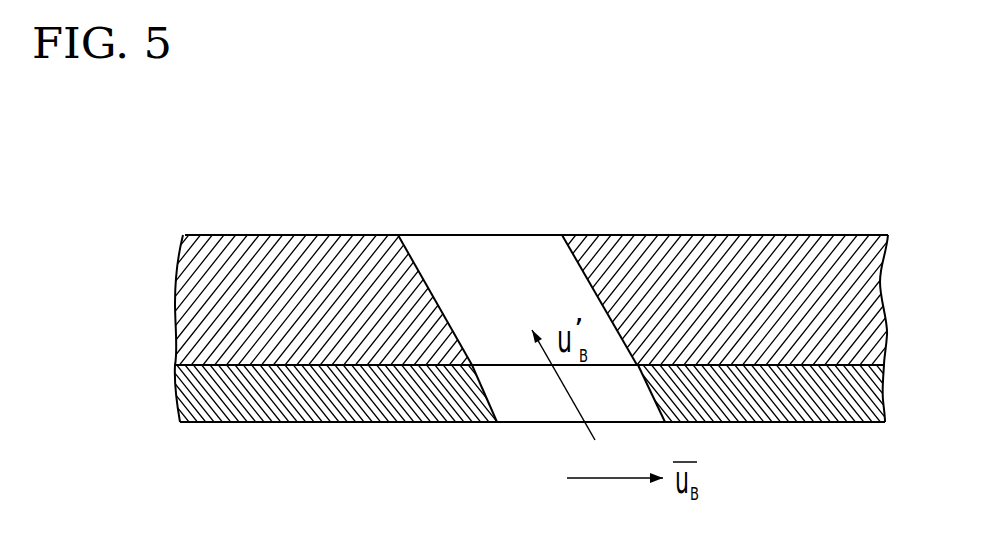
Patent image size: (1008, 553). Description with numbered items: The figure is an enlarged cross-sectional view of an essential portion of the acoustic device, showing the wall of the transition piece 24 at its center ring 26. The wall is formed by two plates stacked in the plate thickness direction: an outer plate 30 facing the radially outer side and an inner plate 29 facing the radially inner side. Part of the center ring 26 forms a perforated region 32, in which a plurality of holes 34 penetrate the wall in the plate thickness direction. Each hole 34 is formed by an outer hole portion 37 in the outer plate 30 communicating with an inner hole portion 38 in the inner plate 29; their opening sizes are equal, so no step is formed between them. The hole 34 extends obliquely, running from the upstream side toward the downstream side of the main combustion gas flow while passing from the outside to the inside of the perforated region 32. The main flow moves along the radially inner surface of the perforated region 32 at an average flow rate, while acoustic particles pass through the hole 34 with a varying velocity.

The transition piece 24 is at (322, 190).
The center ring 26 is at (531, 328).
The inner plate 29 is at (192, 395).
The outer plate 30 is at (192, 303).
The perforated region 32 is at (425, 438).
The hole 34 is at (530, 220).
The outer hole portion 37 is at (415, 258).
The inner hole portion 38 is at (488, 394).